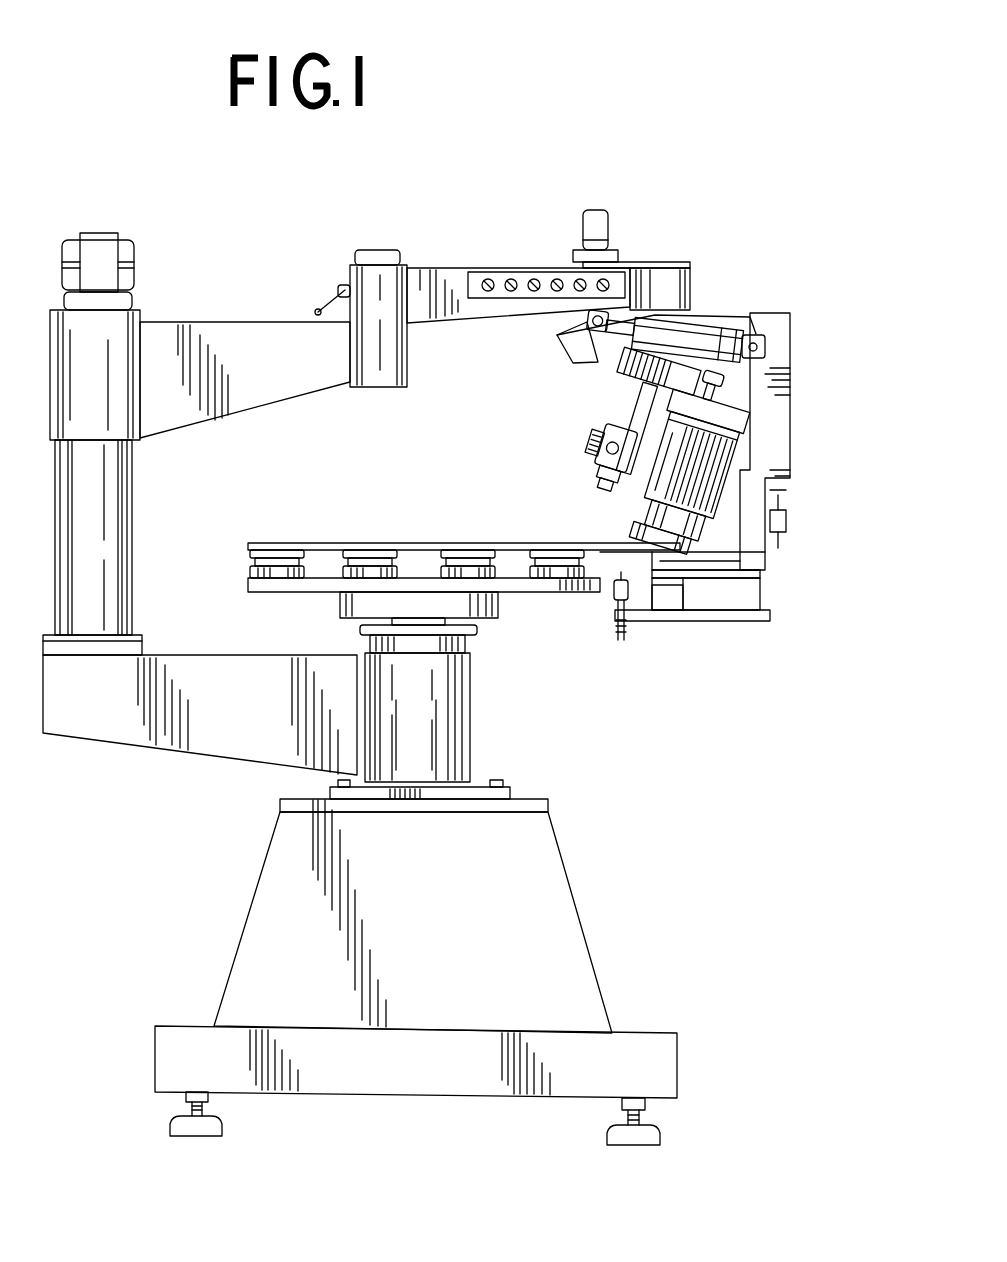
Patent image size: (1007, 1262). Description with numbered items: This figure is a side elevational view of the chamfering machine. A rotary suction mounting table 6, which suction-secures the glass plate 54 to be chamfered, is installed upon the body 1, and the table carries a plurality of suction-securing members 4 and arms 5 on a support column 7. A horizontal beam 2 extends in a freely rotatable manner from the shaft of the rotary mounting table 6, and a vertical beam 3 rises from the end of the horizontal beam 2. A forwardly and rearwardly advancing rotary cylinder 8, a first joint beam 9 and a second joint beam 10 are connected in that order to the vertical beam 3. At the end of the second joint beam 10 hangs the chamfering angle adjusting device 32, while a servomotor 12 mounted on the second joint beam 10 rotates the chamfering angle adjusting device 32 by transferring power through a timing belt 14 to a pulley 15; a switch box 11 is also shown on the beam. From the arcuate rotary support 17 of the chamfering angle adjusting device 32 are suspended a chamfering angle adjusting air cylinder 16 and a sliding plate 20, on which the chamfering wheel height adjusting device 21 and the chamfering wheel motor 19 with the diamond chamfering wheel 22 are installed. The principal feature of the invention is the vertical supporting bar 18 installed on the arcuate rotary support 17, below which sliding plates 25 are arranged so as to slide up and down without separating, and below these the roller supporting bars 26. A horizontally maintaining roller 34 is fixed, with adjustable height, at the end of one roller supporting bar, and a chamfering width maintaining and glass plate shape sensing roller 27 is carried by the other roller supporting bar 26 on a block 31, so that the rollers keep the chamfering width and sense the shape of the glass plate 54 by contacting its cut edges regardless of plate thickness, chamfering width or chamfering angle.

The body 1 is at (547, 880).
The horizontal beam 2 is at (200, 763).
The vertical beam 3 is at (120, 470).
The suction-securing members 4 is at (250, 558).
The arms 5 is at (250, 585).
The rotary suction mounting table 6 is at (345, 610).
The turntable support column 7 is at (420, 717).
The forwardly and rearwardly advancing rotary cylinder 8 is at (125, 232).
The first joint beam 9 is at (213, 321).
The second joint beam 10 is at (430, 288).
The switch box 11 is at (488, 270).
The servomotor 12 is at (595, 208).
The timing belt 14 is at (635, 262).
The pulley 15 is at (668, 266).
The chamfering angle adjusting air cylinder 16 is at (698, 337).
The arcuate rotary support 17 is at (742, 322).
The vertical supporting bar 18 is at (782, 373).
The chamfering wheel motor 19 is at (733, 412).
The sliding plate 20 is at (640, 470).
The chamfering wheel height adjusting device 21 is at (562, 437).
The diamond chamfering wheel 22 is at (635, 540).
The sliding plates 25 is at (766, 580).
The roller supporting bars 26 is at (700, 586).
The chamfering width maintaining and glass plate shape sensing roller 27 is at (766, 554).
The block 31 is at (668, 603).
The chamfering angle adjusting device 32 is at (740, 300).
The horizontally maintaining roller 34 is at (612, 598).
The glass plate 54 is at (300, 548).